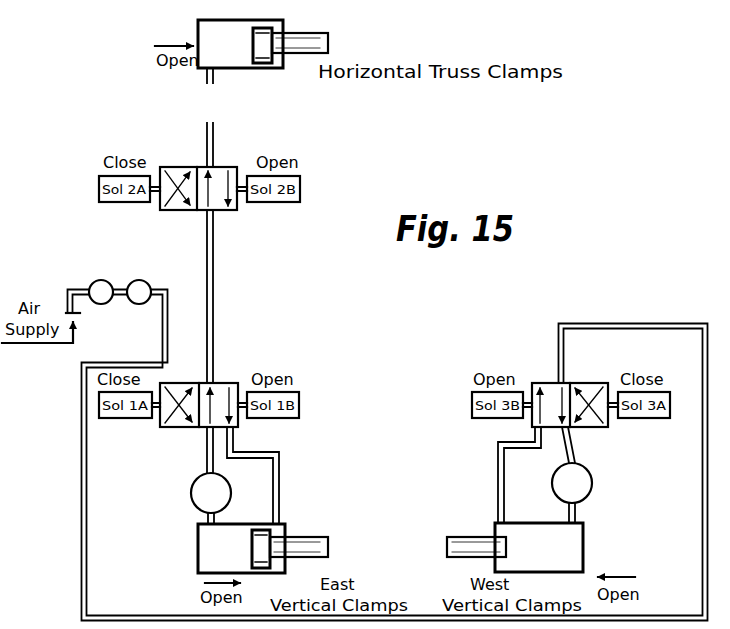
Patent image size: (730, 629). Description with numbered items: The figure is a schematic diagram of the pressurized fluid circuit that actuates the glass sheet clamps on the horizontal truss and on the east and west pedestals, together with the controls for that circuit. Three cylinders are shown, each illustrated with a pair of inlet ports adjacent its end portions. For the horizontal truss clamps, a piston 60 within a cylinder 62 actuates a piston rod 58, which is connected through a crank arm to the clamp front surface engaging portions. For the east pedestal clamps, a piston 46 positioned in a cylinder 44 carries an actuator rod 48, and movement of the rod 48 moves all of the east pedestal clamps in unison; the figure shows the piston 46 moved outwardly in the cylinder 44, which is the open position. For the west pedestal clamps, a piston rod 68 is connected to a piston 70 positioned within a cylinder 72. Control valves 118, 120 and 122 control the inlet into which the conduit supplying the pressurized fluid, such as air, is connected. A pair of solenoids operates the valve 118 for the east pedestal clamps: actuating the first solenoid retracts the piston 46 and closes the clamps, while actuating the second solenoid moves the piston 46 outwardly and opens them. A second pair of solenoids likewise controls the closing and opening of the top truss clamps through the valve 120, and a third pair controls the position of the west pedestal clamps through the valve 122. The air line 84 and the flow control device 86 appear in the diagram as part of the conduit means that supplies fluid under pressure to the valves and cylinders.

The cylinder 62 is at (198, 32).
The piston 60 is at (253, 54).
The piston rod 58 is at (326, 33).
The control valve 120 is at (219, 213).
The control valve 118 is at (228, 383).
The air line 84 is at (283, 518).
The flow control valve 86 is at (207, 516).
The cylinder 44 is at (198, 555).
The piston 46 is at (252, 534).
The actuator rod 48 is at (320, 538).
The control valve 122 is at (576, 382).
The piston 70 is at (535, 535).
The cylinder 72 is at (586, 540).
The piston rod 68 is at (470, 537).